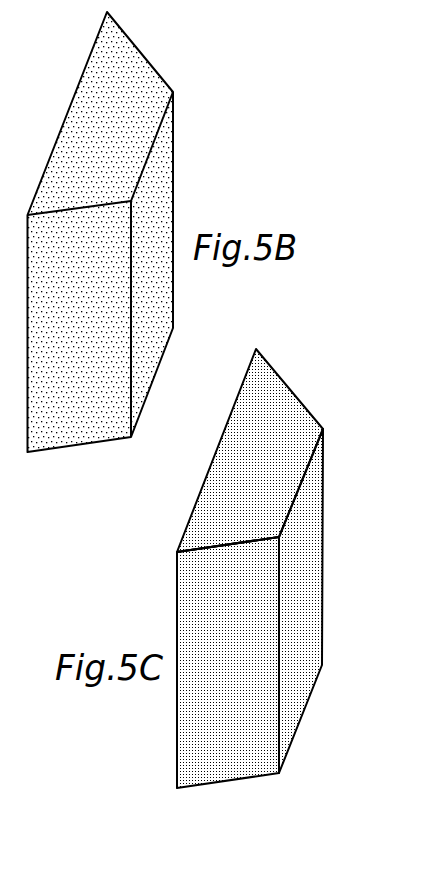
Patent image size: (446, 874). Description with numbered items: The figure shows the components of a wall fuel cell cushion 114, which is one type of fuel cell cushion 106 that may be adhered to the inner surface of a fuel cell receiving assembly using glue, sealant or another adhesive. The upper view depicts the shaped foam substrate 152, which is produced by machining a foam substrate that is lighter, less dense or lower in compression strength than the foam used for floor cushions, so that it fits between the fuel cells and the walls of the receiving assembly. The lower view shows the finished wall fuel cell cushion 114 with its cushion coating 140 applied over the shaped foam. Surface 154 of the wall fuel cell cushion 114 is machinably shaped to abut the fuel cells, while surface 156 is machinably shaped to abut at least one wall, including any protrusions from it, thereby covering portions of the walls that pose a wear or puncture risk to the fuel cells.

In FIG. 5B, the shaped foam substrate 152 is at (142, 68).
In FIG. 5C, the surface 156 is at (203, 482).
In FIG. 5C, the surface 154 is at (303, 682).
In FIG. 5C, the cushion coating 140 is at (177, 737).
In FIG. 5C, the fuel cell cushion 106 is at (177, 557).
In FIG. 5C, the wall fuel cell cushion 114 is at (177, 606).